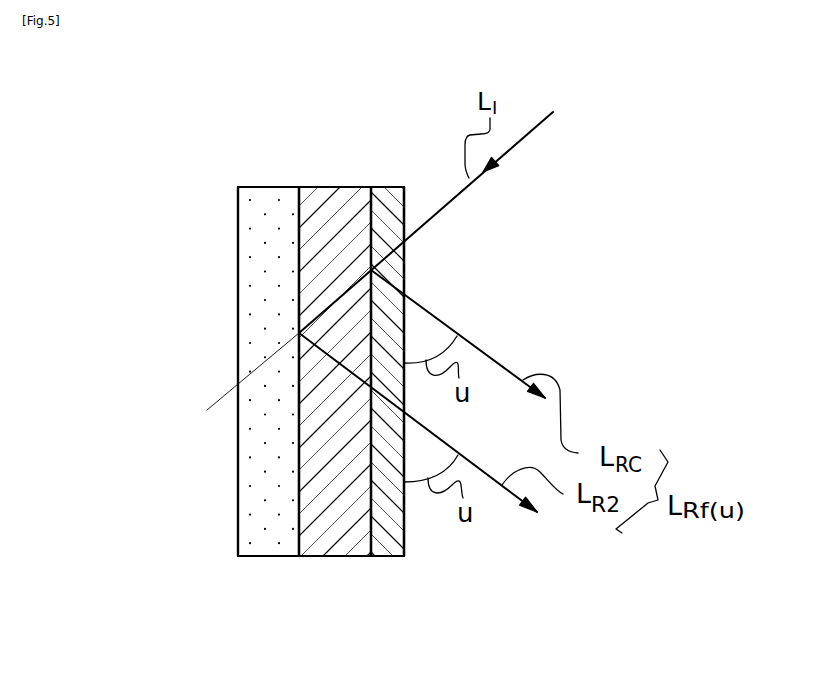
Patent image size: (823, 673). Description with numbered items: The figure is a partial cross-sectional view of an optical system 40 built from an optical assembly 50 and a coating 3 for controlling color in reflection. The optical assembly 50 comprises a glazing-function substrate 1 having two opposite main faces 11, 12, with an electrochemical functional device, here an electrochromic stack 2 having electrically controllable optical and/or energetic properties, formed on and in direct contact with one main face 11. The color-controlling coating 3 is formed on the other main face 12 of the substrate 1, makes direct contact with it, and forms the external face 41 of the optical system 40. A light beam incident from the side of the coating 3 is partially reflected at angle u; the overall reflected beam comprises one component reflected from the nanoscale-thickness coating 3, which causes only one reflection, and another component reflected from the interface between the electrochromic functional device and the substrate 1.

The glazing-function substrate 1 is at (327, 545).
The electrochromic stack 2 is at (237, 507).
The coating for controlling color in reflection 3 is at (404, 538).
The main face 11 is at (299, 198).
The main face 12 is at (398, 216).
The optical system 40 is at (172, 598).
The external face 41 is at (404, 200).
The optical assembly 50 is at (281, 596).